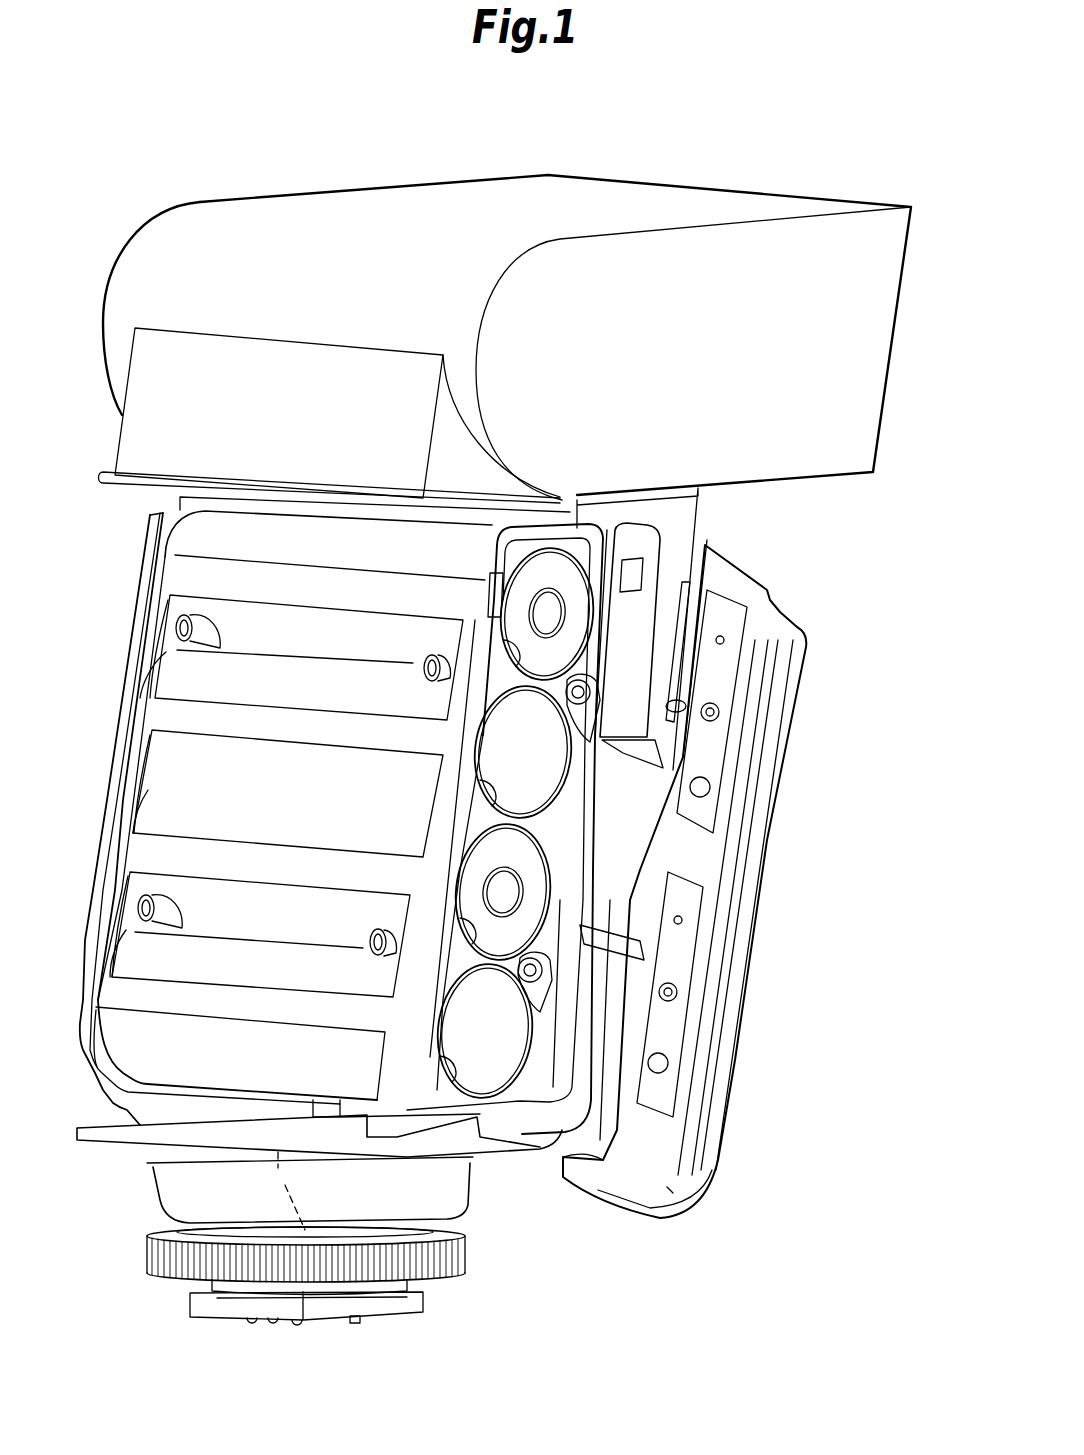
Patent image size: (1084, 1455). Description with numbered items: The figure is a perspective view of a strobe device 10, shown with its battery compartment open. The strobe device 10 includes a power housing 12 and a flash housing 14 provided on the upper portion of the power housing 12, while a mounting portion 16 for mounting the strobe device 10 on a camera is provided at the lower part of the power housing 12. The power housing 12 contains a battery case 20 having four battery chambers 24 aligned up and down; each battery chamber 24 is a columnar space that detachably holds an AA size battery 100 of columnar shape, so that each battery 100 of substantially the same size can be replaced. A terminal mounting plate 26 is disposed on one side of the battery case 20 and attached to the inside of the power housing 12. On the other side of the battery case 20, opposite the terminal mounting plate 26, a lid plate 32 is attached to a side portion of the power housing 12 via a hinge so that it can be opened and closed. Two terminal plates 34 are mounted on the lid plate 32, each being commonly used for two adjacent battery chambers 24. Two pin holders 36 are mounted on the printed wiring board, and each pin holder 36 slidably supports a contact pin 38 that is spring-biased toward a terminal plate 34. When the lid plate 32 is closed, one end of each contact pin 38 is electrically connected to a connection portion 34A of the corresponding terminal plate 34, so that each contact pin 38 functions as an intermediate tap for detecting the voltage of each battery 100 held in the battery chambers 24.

The strobe device 10 is at (906, 450).
The power housing 12 is at (712, 535).
The flash housing 14 is at (806, 188).
The mounting portion 16 is at (327, 1310).
The battery case 20 is at (150, 718).
The battery chamber 24 is at (505, 636).
The terminal mounting plate 26 is at (110, 819).
The lid plate 32 is at (705, 860).
The terminal plate 34 is at (725, 660).
The connection portion 34A is at (722, 714).
The pin holder 36 is at (582, 716).
The contact pin 38 is at (600, 740).
The battery 100 is at (512, 598).